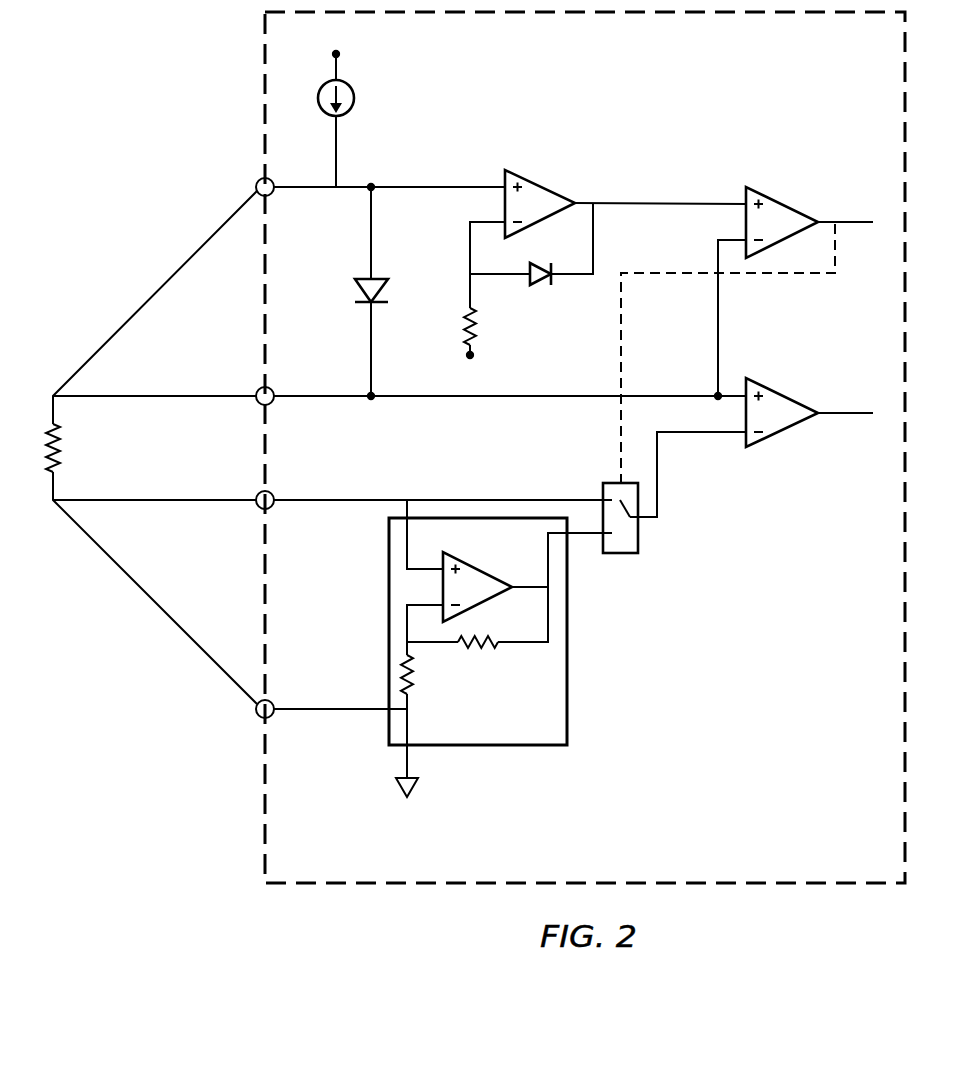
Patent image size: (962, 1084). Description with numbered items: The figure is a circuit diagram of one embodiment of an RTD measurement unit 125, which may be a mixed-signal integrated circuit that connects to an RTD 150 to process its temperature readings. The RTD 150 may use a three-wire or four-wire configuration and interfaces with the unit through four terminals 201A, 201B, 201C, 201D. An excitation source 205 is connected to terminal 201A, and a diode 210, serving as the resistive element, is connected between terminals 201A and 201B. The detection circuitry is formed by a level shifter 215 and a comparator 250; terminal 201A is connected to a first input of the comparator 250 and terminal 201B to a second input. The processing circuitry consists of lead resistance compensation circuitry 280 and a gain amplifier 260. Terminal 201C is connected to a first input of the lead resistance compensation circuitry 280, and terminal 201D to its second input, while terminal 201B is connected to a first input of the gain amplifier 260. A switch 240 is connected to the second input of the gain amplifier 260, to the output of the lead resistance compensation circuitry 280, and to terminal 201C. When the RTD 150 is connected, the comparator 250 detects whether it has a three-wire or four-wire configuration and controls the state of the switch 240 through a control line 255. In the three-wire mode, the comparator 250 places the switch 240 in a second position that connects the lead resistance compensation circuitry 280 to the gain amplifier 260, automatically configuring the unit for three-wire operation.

The RTD measurement unit 125 is at (895, 875).
The RTD 150 is at (151, 447).
The terminal 201A is at (258, 181).
The terminal 201B is at (258, 386).
The terminal 201C is at (258, 490).
The terminal 201D is at (260, 723).
The excitation source 205 is at (355, 92).
The diode 210 is at (372, 279).
The level shifter 215 is at (547, 183).
The switch 240 is at (639, 530).
The comparator 250 is at (772, 193).
The control line 255 is at (620, 442).
The gain amplifier 260 is at (772, 385).
The lead resistance compensation circuitry 280 is at (568, 600).